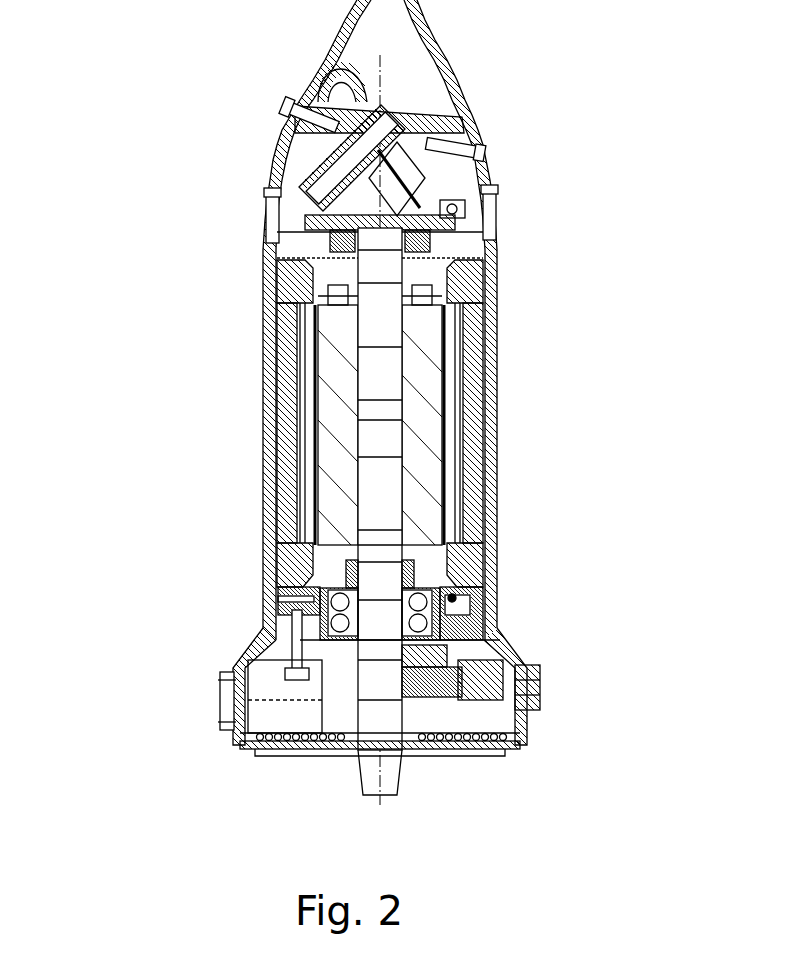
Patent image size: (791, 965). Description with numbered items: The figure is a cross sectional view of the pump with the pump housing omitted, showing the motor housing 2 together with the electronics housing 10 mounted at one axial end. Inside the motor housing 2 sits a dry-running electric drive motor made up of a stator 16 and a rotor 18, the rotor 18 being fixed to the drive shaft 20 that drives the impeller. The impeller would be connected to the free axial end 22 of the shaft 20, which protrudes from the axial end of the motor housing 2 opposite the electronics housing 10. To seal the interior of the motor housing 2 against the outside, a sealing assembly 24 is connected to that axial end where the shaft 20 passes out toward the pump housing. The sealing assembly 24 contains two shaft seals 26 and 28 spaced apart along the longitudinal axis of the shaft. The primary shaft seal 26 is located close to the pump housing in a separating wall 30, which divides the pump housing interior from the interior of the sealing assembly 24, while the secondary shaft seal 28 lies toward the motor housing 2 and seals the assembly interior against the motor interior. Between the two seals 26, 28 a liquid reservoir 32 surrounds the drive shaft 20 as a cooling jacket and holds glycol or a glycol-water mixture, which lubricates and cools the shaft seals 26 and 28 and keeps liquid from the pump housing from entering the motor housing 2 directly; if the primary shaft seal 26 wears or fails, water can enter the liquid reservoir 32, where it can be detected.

The motor housing 2 is at (265, 362).
The electronics housing 10 is at (483, 150).
The stator 16 is at (468, 274).
The rotor 18 is at (423, 353).
The drive shaft 20 is at (375, 450).
The free axial end 22 is at (482, 793).
The sealing assembly 24 is at (305, 155).
The primary shaft seal 26 is at (420, 733).
The secondary shaft seal 28 is at (420, 692).
The separating wall 30 is at (285, 752).
The liquid reservoir 32 is at (285, 706).